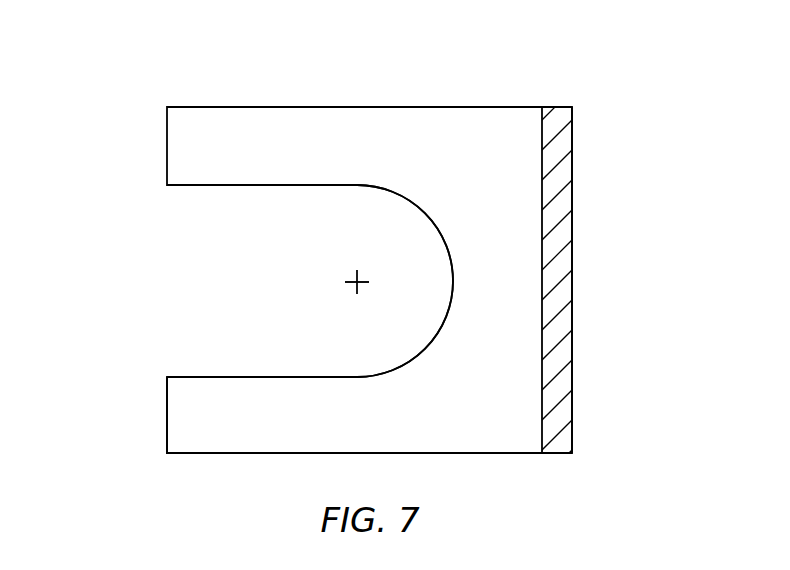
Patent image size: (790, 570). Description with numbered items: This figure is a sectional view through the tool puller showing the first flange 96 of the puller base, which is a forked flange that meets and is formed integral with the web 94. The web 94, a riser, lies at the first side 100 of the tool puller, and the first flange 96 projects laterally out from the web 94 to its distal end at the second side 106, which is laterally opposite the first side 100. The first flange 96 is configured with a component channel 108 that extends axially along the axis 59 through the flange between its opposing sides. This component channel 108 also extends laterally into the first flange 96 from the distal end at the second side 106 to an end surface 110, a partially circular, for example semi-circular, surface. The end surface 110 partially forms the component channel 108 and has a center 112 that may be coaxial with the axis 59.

The first flange 96 is at (341, 106).
The web 94 is at (557, 386).
The first side 100 is at (572, 270).
The end surface 110 is at (443, 239).
The axis 59 is at (355, 282).
The center 112 is at (357, 282).
The component channel 108 is at (181, 296).
The second side 106 is at (167, 410).